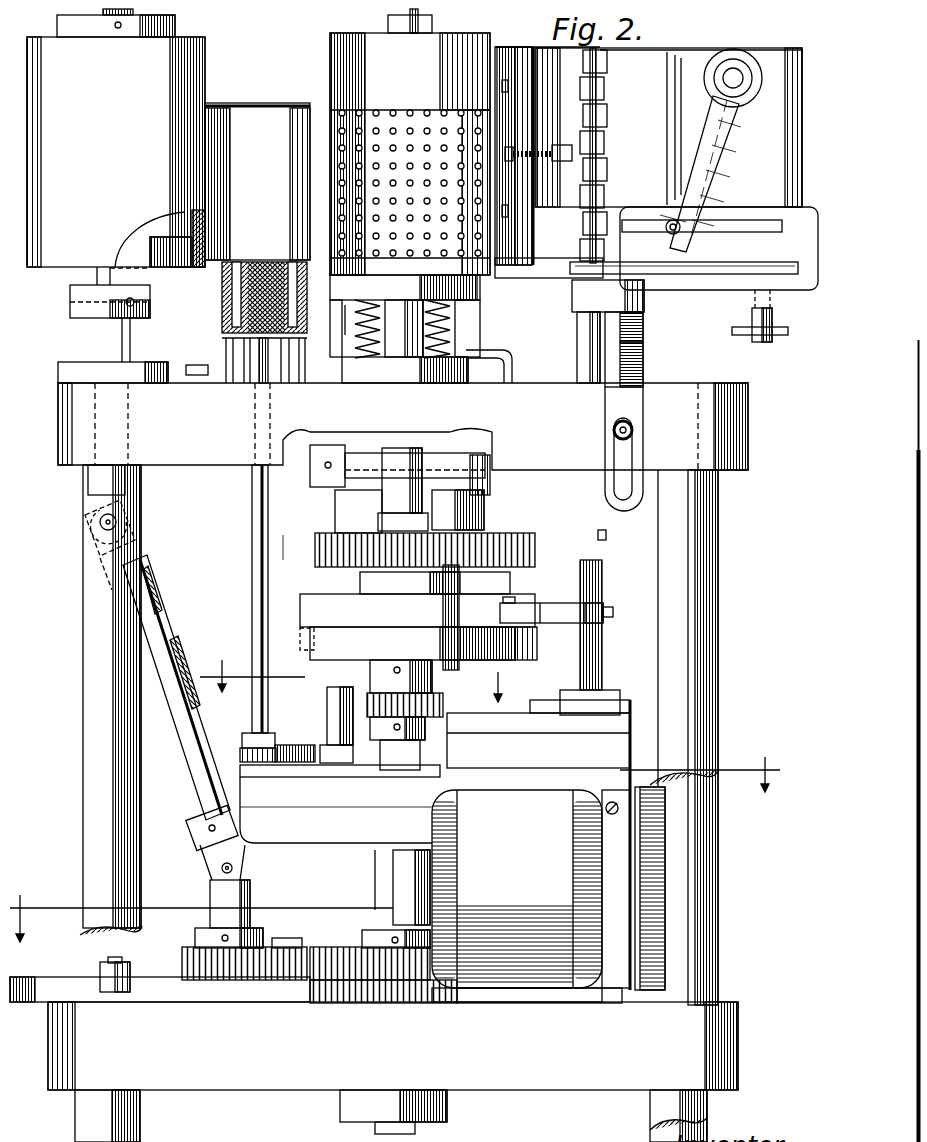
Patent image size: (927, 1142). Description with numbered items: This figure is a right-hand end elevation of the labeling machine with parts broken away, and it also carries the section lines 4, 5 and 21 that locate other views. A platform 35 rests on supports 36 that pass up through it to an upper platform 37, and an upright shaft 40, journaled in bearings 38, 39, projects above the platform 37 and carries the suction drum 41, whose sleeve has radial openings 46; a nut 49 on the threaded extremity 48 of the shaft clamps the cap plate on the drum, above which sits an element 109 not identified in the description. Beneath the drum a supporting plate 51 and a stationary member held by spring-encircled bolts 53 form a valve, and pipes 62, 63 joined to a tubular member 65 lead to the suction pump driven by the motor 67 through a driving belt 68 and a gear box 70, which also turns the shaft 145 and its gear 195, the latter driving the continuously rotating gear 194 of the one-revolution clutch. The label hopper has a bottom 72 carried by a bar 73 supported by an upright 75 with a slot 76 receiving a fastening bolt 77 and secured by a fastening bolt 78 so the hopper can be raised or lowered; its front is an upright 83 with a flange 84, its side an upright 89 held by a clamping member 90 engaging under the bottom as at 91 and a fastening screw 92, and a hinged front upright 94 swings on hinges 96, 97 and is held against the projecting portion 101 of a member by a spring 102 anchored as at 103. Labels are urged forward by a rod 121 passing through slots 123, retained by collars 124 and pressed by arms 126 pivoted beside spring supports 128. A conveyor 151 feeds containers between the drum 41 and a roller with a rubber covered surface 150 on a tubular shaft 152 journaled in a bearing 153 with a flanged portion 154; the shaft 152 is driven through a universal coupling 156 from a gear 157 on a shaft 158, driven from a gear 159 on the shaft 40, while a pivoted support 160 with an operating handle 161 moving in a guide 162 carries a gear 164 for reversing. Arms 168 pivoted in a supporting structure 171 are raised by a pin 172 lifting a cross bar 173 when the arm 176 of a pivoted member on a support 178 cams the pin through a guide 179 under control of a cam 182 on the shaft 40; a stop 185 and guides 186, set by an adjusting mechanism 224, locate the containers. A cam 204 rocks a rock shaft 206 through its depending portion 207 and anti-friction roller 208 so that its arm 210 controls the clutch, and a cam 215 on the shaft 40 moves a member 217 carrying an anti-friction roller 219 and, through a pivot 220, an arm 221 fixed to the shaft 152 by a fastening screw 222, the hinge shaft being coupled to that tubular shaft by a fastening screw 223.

The section line 4- 4 is at (395, 840).
The section line 5- 5 is at (359, 674).
The axis line 21 is at (461, 553).
The platform 35 is at (720, 1040).
The supports 36 is at (90, 718).
The platform 37 is at (735, 452).
The bearing 38 is at (418, 445).
The bearing 39 is at (447, 1108).
The upright shaft 40 is at (378, 880).
The drum 41 is at (330, 85).
The radial openings 46 is at (445, 113).
The threaded extremity 48 is at (420, 14).
The nut 49 is at (388, 26).
The supporting plate 51 is at (383, 310).
The bolts 53 is at (455, 335).
The pipe 62 is at (339, 328).
The pipe 63 is at (460, 322).
The tubular member 65 is at (510, 360).
The motor 67 is at (517, 896).
The driving belt 68 is at (610, 805).
The gear box 70 is at (538, 845).
The main bottom portion 72 is at (690, 275).
The bar 73 is at (573, 302).
The upright 75 is at (645, 362).
The slot 76 is at (630, 462).
The fastening bolt 77 is at (613, 432).
The fastening bolt 78 is at (640, 318).
The upright 83 is at (497, 45).
The flange 84 is at (495, 258).
The upright 89 is at (683, 58).
The clamping member 90 is at (797, 220).
The engagement point 91 is at (765, 300).
The fastening screw 92 is at (760, 338).
The upright 94 is at (565, 82).
The hinge shaft 96 is at (577, 378).
The hinge 97 is at (597, 47).
The laterally projecting portion 101 is at (520, 60).
The spring 102 is at (545, 152).
The anchor point 103 is at (560, 163).
The fitting 109 is at (165, 20).
The rod 121 is at (668, 233).
The slots 123 is at (733, 218).
The collars 124 is at (668, 225).
The arms 126 is at (715, 142).
The supports 128 is at (735, 80).
The shaft 145 is at (460, 588).
The rubber covered surface 150 is at (116, 152).
The conveyor 151 is at (250, 262).
The shaft 152 is at (107, 20).
The bearing 153 is at (132, 343).
The flanged portion 154 is at (70, 366).
The universal coupling 156 is at (165, 655).
The gear 157 is at (195, 950).
The shaft 158 is at (235, 915).
The gear 159 is at (355, 950).
The pivotally mounted support 160 is at (350, 1005).
The operating handle 161 is at (50, 990).
The guide 162 is at (105, 980).
The gear 164 is at (333, 775).
The arms 168 is at (220, 272).
The supporting structure 171 is at (235, 312).
The pin 172 is at (258, 390).
The cross bar 173 is at (235, 350).
The arm 176 is at (278, 752).
The support 178 is at (283, 782).
The guide 179 is at (272, 735).
The cam 182 is at (372, 700).
The stop 185 is at (238, 112).
The guides 186 is at (185, 215).
The gear 194 is at (335, 512).
The gear 195 is at (560, 532).
The cam 204 is at (470, 510).
The rock shaft 206 is at (363, 455).
The depending portion 207 is at (385, 503).
The anti-friction roller 208 is at (380, 522).
The arm 210 is at (318, 445).
The cam 215 is at (392, 655).
The member 217 is at (337, 627).
The anti-friction roller 219 is at (322, 650).
The pivot 220 is at (500, 605).
The arm 221 is at (545, 603).
The fastening screw 222 is at (613, 612).
The fastening screw 223 is at (605, 538).
The adjusting mechanism 224 is at (70, 305).